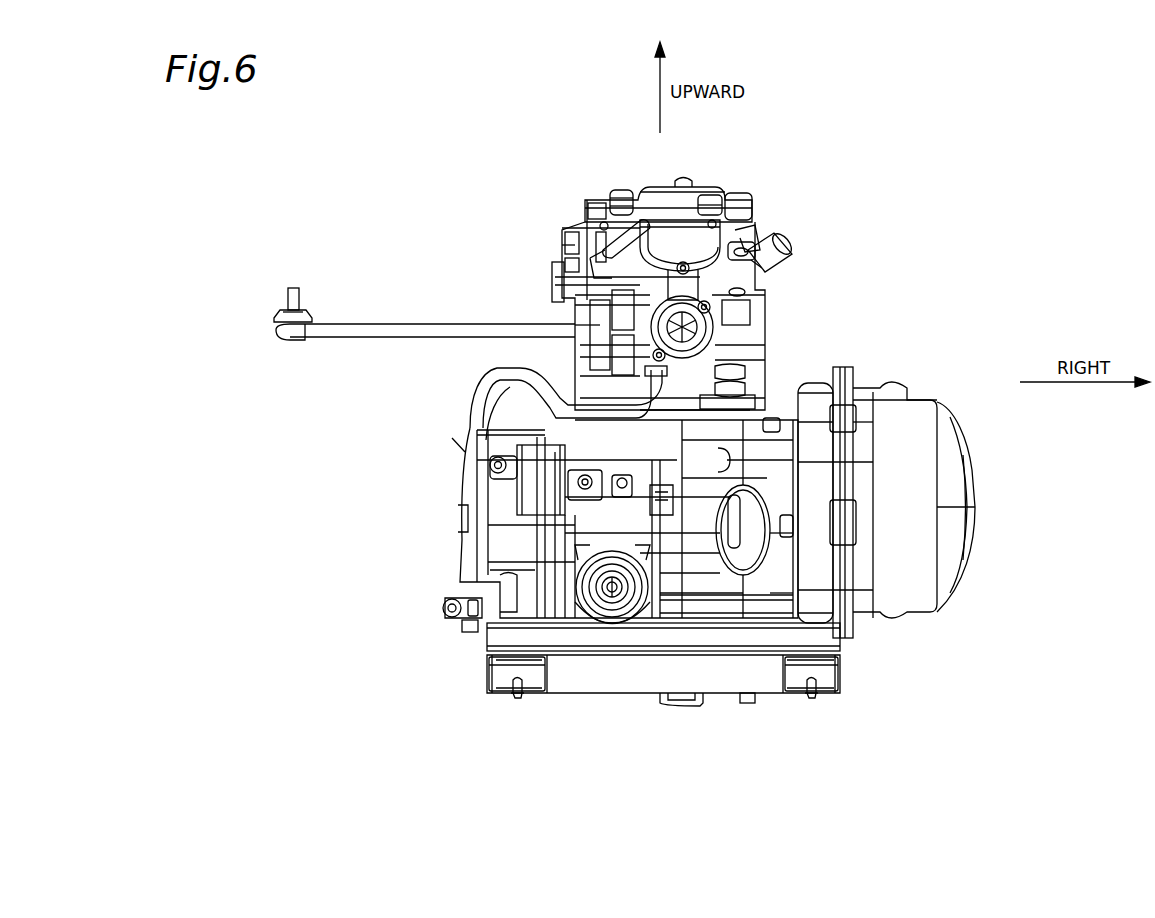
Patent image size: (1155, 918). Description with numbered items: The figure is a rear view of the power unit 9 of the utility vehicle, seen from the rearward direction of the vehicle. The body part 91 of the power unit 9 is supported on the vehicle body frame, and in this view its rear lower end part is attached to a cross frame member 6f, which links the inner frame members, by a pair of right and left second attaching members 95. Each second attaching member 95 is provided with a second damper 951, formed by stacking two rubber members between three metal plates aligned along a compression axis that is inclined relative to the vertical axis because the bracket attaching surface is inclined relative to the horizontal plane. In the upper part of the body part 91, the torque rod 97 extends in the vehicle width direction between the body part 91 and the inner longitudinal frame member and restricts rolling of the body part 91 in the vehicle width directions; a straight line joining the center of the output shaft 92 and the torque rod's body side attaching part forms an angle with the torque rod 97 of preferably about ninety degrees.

The power unit 9 is at (882, 272).
The body part 91 is at (745, 242).
The output shaft 92 is at (595, 572).
The torque rod 97 is at (418, 330).
The cross frame member 6f is at (721, 680).
The second attaching member 95 is at (492, 710).
The second damper 951 is at (533, 675).